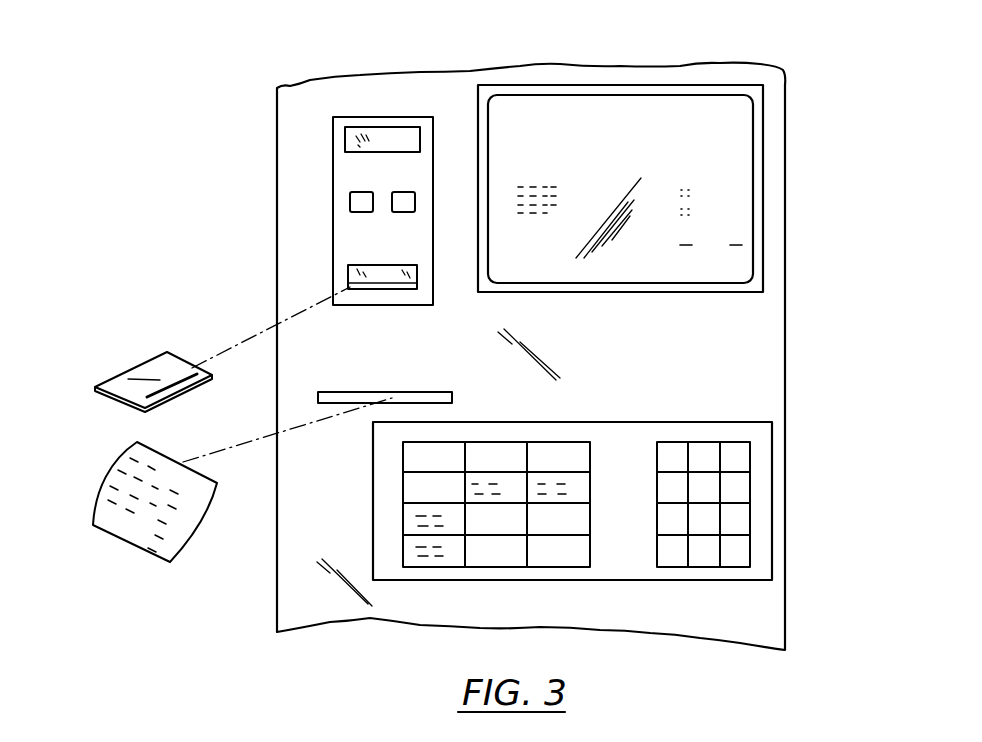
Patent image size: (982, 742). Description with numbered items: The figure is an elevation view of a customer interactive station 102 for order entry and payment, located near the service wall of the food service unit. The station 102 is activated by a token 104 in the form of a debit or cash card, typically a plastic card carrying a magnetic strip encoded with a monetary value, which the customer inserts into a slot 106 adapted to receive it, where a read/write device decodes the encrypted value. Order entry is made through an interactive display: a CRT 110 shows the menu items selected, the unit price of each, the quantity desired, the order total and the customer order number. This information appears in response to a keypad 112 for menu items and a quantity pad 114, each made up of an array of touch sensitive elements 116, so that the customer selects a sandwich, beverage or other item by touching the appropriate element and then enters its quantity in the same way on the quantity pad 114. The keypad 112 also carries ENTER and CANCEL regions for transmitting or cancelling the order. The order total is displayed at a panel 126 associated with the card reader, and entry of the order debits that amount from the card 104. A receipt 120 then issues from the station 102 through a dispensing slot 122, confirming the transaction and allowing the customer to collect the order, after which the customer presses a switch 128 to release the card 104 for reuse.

The customer interactive station 102 is at (750, 327).
The token 104 is at (136, 378).
The slot 106 is at (393, 283).
The CRT 110 is at (750, 186).
The keypad 112 is at (489, 566).
The quantity pad 114 is at (691, 566).
The touch sensitive elements 116 is at (487, 443).
The receipt 120 is at (115, 478).
The dispensing slot 122 is at (412, 398).
The panel 126 is at (394, 133).
The switch 128 is at (352, 200).